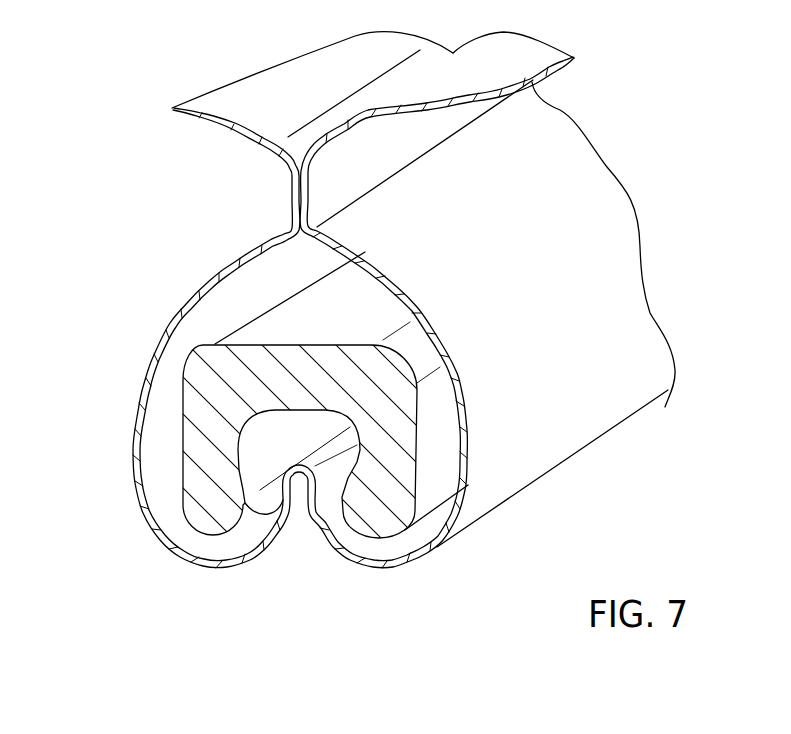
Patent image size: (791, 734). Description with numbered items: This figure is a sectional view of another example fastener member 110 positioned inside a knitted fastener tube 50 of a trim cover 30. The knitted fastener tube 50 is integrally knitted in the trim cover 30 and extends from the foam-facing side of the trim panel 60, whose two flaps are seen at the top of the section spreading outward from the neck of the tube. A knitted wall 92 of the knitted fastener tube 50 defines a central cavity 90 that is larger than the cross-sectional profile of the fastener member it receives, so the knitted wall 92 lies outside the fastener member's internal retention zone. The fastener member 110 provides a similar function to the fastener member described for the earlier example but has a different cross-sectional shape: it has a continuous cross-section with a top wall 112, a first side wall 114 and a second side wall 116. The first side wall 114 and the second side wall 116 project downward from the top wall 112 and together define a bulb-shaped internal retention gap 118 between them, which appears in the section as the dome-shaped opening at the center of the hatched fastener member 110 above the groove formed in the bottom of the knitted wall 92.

The trim cover 30 is at (678, 155).
The knitted fastener tube 50 is at (597, 327).
The trim panel 60 is at (267, 97).
The central cavity 90 is at (297, 263).
The knitted wall 92 is at (308, 512).
The fastener member 110 is at (175, 367).
The top wall 112 is at (277, 370).
The first side wall 114 is at (205, 463).
The second side wall 116 is at (388, 503).
The internal retention gap 118 is at (272, 453).